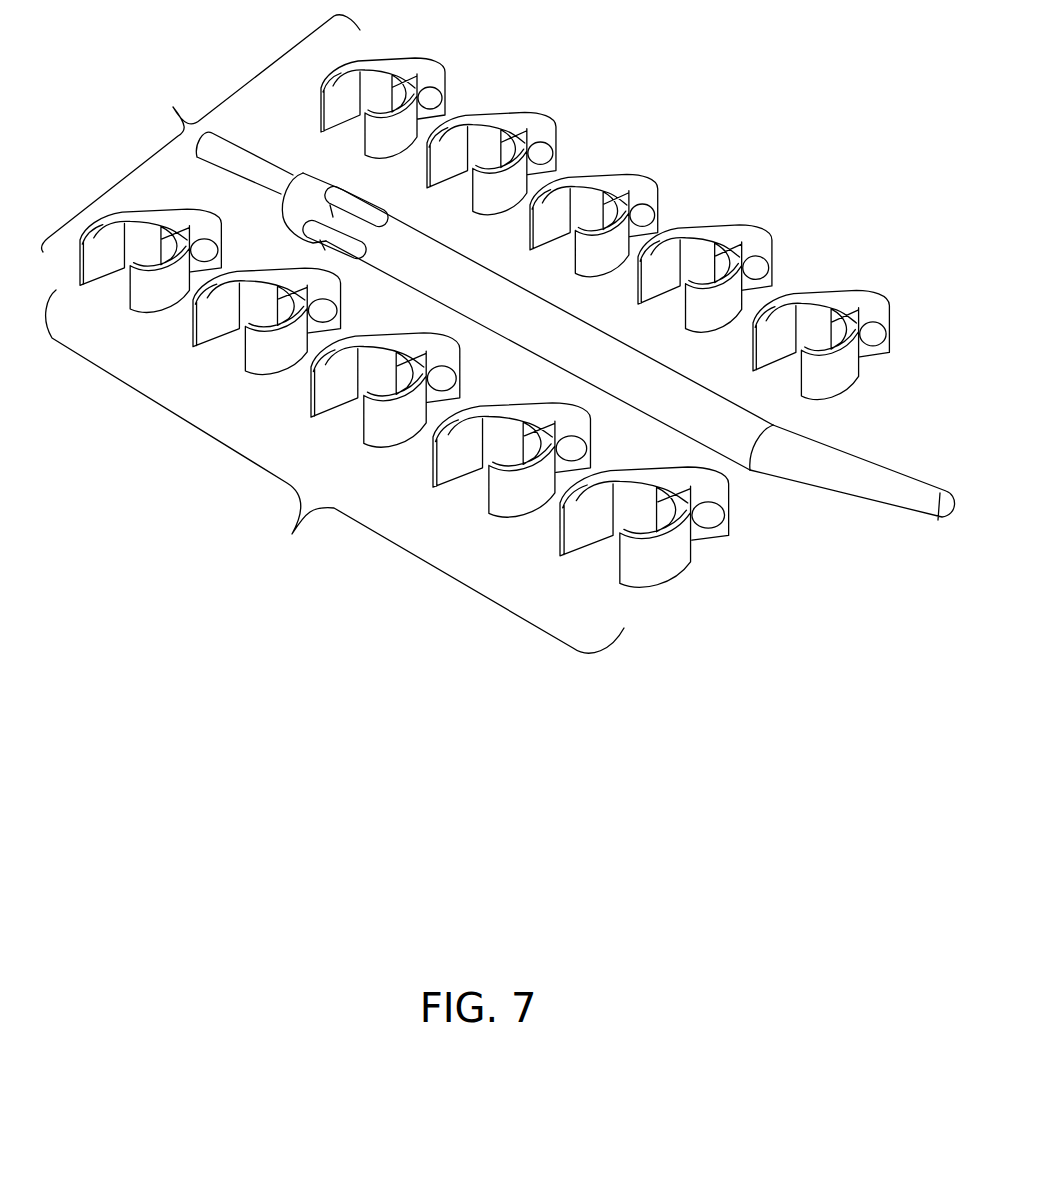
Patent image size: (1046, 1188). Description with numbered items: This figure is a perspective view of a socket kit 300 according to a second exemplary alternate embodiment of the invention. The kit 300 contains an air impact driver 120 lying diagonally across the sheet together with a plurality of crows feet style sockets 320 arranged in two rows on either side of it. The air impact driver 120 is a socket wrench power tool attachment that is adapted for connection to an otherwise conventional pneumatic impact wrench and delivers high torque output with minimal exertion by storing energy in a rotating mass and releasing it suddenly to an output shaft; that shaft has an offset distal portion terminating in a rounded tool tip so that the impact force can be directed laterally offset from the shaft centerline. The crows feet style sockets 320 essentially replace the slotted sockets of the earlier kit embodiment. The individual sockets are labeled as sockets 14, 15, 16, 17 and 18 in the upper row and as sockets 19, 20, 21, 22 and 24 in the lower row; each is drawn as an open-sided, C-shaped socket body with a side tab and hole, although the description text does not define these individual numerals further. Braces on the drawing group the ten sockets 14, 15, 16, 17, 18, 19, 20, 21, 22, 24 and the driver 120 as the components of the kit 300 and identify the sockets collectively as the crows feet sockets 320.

The clip 14 is at (410, 65).
The clip 15 is at (512, 122).
The clip 16 is at (623, 182).
The clip 17 is at (730, 243).
The clip 18 is at (853, 300).
The clip 19 is at (210, 224).
The clip 20 is at (322, 287).
The clip 21 is at (420, 345).
The clip 22 is at (552, 413).
The clip 24 is at (683, 480).
The air impact driver 120 is at (858, 503).
The socket kit 300 is at (201, 133).
The crows feet style sockets 320 is at (335, 471).